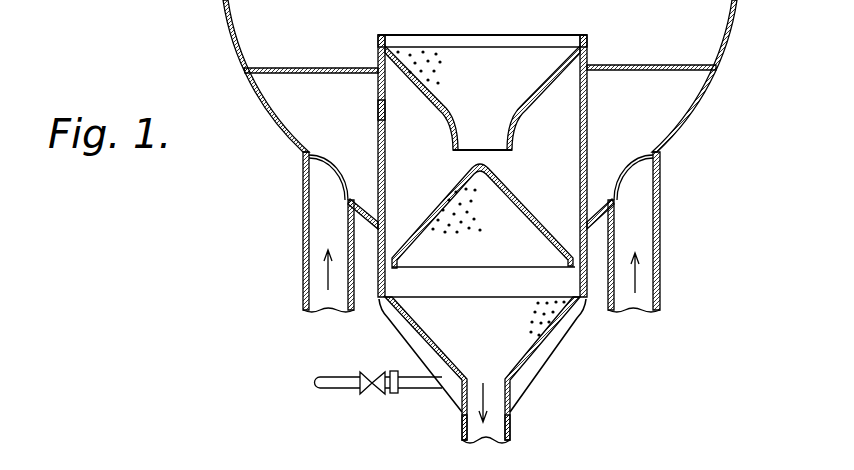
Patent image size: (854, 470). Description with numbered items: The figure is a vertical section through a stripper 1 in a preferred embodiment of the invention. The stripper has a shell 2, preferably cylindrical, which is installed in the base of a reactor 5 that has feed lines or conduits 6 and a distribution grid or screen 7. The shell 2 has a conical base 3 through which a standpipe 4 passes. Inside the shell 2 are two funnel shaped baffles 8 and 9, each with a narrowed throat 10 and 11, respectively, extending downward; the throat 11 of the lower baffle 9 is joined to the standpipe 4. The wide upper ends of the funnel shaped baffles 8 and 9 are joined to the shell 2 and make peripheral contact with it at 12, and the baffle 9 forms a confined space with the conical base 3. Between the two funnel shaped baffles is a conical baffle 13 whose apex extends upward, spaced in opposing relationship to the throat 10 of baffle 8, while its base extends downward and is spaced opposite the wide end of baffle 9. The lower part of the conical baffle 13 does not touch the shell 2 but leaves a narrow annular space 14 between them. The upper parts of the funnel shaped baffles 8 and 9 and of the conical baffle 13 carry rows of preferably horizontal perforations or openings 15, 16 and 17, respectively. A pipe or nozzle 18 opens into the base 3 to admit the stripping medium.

The stripper 1 is at (588, 116).
The shell 2 is at (378, 110).
The conical base 3 is at (540, 368).
The standpipe 4 is at (511, 429).
The reactor 5 is at (735, 12).
The feed lines or conduits 6 is at (304, 290).
The distribution grid or screen 7 is at (296, 68).
The funnel shaped baffle 8 is at (437, 104).
The funnel shaped baffle 9 is at (447, 350).
The throat 10 is at (505, 146).
The throat 11 is at (513, 398).
The peripheral contact 12 is at (380, 50).
The conical baffle 13 is at (408, 238).
The narrow annular space 14 is at (381, 252).
The perforations or openings 15 is at (411, 76).
The perforations or openings 16 is at (410, 312).
The perforations or openings 17 is at (446, 201).
The pipe or nozzle 18 is at (408, 390).